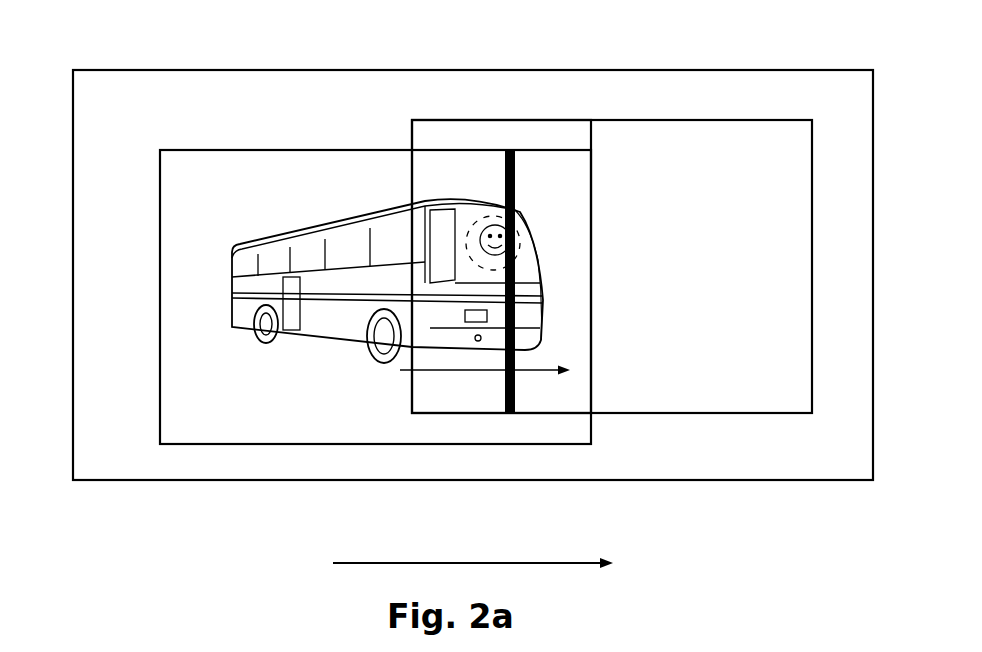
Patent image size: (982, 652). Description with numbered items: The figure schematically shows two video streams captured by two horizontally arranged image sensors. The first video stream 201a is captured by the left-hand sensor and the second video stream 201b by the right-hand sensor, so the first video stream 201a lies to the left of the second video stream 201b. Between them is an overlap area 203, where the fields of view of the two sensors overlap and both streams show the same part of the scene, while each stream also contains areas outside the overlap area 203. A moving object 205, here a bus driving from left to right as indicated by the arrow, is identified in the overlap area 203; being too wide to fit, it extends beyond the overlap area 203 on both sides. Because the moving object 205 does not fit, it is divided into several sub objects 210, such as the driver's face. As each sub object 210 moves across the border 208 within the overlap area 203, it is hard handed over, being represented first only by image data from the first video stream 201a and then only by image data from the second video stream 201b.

The first video stream 201a is at (217, 152).
The second video stream 201b is at (670, 119).
The overlap area 203 is at (455, 393).
The moving object 205 is at (322, 315).
The border 208 is at (503, 170).
The sub object 210 is at (515, 260).